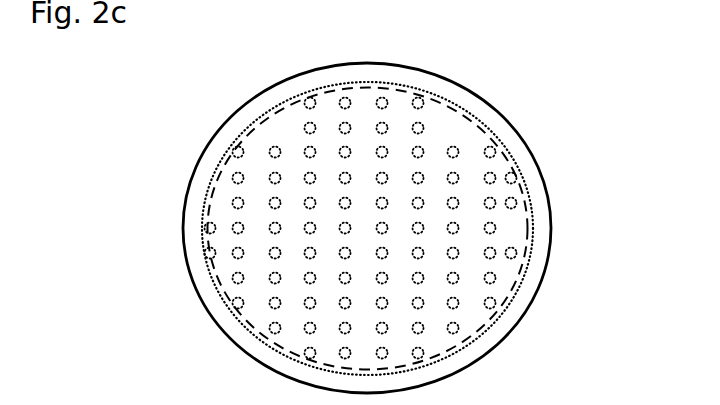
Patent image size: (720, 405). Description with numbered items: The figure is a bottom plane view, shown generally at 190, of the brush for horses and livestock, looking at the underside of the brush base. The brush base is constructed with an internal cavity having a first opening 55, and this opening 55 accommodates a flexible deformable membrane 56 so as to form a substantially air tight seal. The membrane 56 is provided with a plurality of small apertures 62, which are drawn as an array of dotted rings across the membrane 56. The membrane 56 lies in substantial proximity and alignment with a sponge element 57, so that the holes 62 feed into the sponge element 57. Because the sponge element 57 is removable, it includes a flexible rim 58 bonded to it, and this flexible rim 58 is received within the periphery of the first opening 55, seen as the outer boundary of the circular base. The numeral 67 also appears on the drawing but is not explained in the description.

The perforated plate assembly 190 is at (141, 133).
The outer rim 58 is at (539, 222).
The dotted boundary line 56 is at (520, 237).
The dashed boundary line 55 is at (442, 100).
The array of apertures 57 is at (501, 280).
The aperture 62 is at (271, 280).
The plate 67 is at (691, 15).